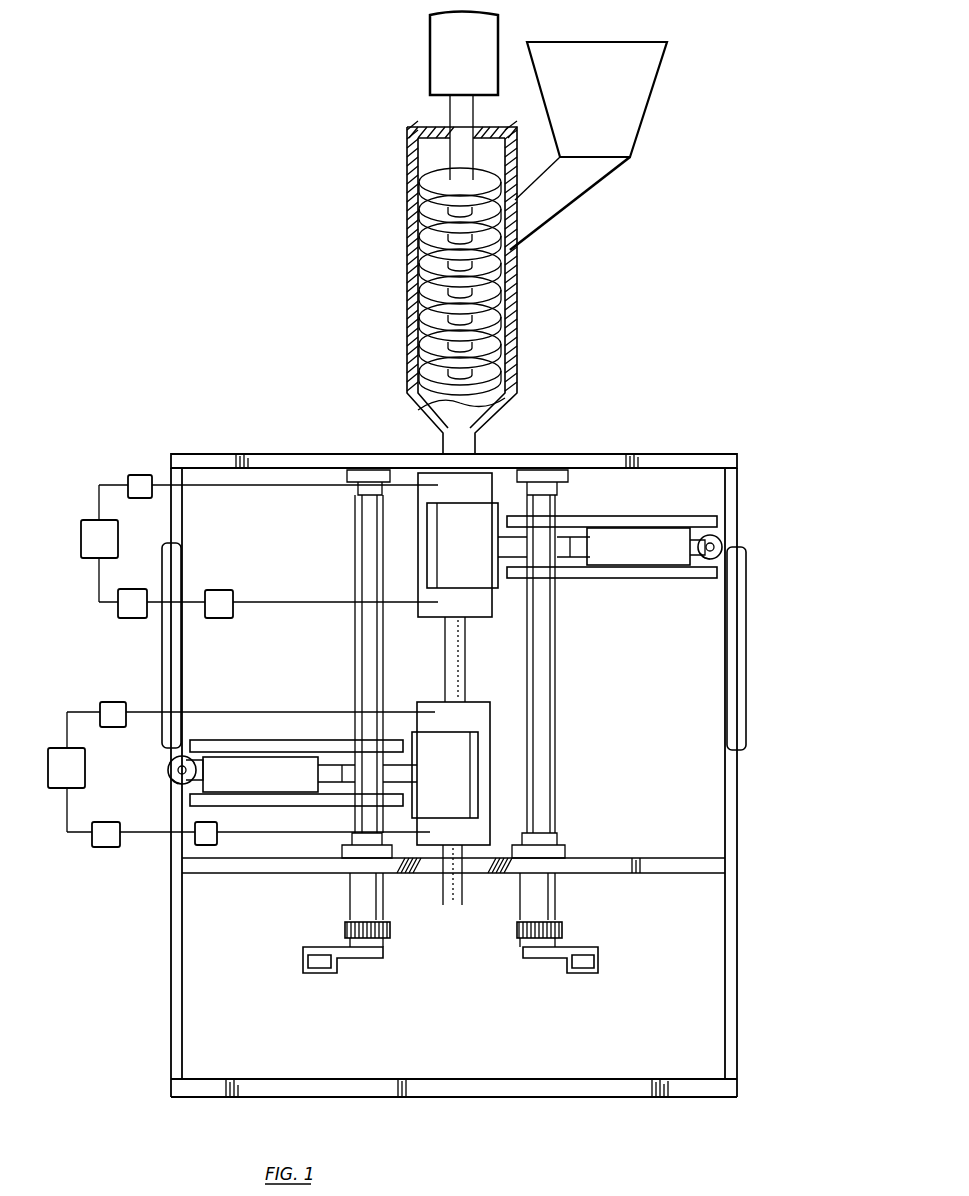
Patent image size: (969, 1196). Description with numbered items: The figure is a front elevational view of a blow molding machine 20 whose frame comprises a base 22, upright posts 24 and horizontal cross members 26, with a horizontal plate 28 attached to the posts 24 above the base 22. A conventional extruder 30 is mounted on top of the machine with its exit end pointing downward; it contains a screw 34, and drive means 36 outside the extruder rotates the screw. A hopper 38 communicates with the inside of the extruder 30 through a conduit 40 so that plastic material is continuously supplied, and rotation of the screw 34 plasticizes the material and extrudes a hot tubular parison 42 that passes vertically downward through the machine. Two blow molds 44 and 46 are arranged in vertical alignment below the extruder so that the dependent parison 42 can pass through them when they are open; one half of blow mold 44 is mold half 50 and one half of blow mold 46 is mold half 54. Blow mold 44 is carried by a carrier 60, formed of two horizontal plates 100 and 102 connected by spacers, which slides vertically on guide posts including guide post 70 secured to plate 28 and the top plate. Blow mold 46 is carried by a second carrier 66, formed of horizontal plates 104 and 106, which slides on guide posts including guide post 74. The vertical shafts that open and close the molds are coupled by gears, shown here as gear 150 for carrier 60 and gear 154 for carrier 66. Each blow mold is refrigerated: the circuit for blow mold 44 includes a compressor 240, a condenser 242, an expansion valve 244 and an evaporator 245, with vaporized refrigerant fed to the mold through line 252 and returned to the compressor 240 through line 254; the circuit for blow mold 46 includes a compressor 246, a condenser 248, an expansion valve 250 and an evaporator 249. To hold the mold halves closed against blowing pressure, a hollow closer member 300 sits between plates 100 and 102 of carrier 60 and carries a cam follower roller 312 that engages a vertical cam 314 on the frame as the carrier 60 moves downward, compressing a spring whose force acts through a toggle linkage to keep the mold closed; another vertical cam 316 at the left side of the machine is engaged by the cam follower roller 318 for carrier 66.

The blow molding machine 20 is at (447, 748).
The base 22 is at (572, 1079).
The upright posts 24 is at (728, 897).
The horizontal cross members 26 is at (605, 455).
The horizontal plate 28 is at (639, 858).
The extruder 30 is at (407, 245).
The screw 34 is at (507, 290).
The drive means 36 is at (470, 60).
The hopper 38 is at (648, 80).
The conduit 40 is at (588, 184).
The tubular parison 42 is at (445, 655).
The blow mold 44 is at (446, 562).
The blow mold 46 is at (448, 753).
The mold half 50 is at (428, 605).
The mold half 54 is at (428, 704).
The carrier 60 is at (642, 546).
The carrier 66 is at (292, 771).
The guide post 70 is at (542, 676).
The guide post 74 is at (365, 676).
The horizontal plate 100 is at (680, 516).
The horizontal plate 102 is at (675, 578).
The horizontal plate 104 is at (300, 742).
The horizontal plate 106 is at (265, 796).
The gear 150 is at (562, 926).
The gear 154 is at (392, 935).
The compressor 240 is at (137, 475).
The condenser 242 is at (81, 528).
The expansion valve 244 is at (135, 618).
The evaporator 245 is at (228, 570).
The compressor 246 is at (112, 702).
The condenser 248 is at (58, 748).
The evaporator 249 is at (195, 828).
The expansion valve 250 is at (98, 847).
The line 252 is at (258, 602).
The line 254 is at (250, 488).
The closer member 300 is at (622, 565).
The cam follower roller 312 is at (722, 538).
The vertical cam 314 is at (740, 625).
The vertical cam 316 is at (178, 657).
The cam follower roller 318 is at (216, 792).